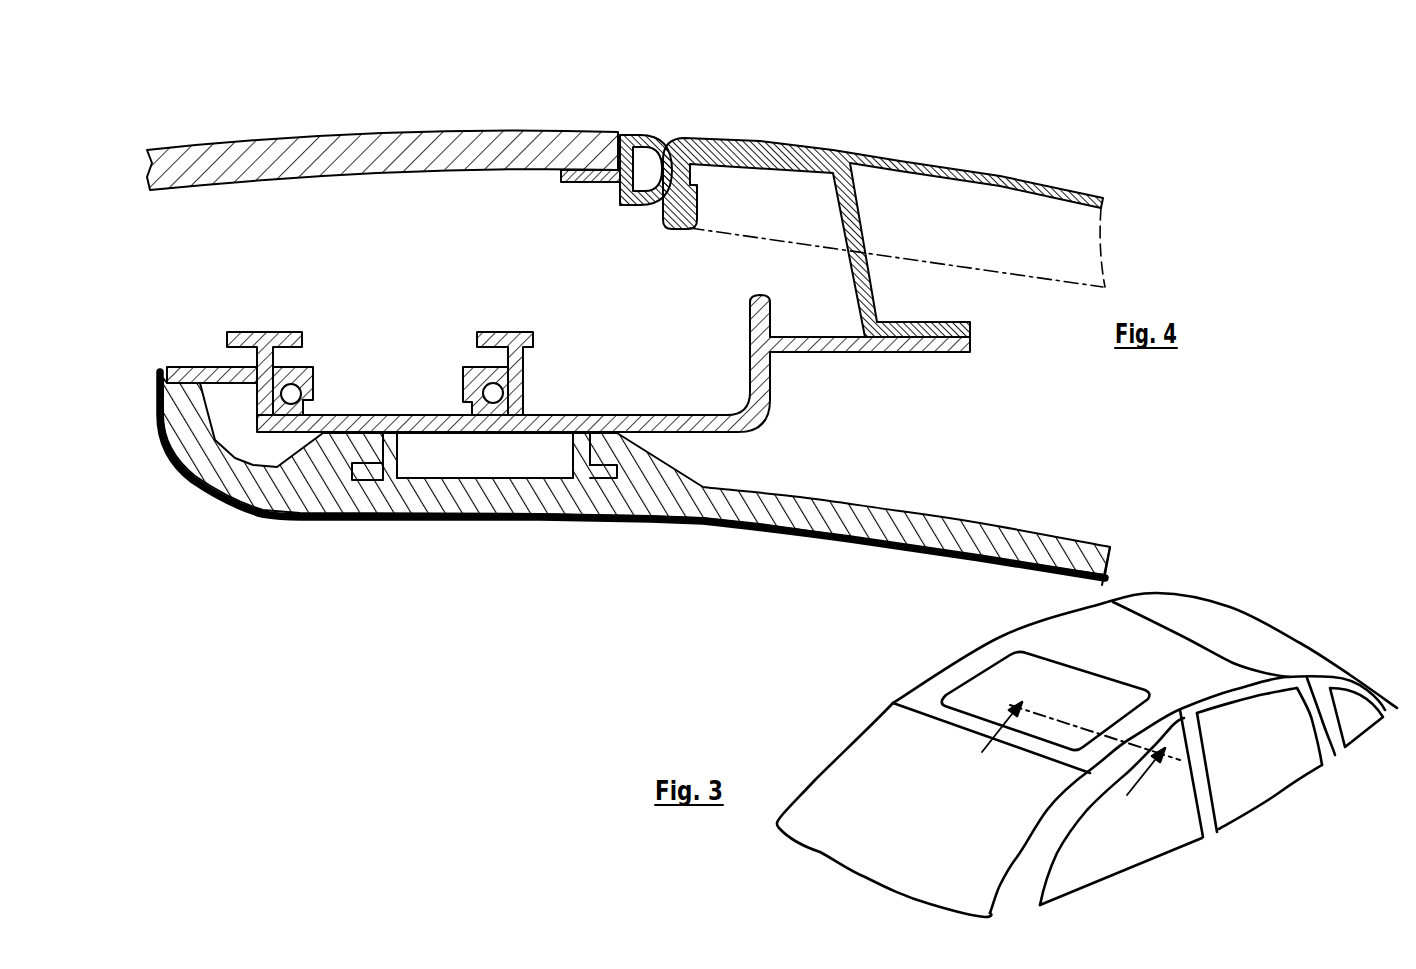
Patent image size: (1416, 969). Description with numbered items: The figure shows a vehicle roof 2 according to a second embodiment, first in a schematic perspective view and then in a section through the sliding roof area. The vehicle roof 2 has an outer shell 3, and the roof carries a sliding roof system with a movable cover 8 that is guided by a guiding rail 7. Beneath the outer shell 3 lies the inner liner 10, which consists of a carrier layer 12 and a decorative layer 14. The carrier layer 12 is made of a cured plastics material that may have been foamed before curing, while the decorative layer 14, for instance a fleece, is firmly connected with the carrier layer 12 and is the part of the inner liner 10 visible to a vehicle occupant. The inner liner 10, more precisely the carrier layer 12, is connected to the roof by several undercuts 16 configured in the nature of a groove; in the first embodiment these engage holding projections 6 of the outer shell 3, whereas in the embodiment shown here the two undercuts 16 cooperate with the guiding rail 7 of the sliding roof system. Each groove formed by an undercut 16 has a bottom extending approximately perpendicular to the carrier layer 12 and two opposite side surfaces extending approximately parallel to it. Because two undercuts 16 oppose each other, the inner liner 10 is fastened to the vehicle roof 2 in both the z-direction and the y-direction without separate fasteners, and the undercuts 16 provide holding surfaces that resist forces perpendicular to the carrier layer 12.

In FIG. 3, the vehicle roof 2 is at (1180, 643).
In FIG. 4, the outer shell 3 is at (905, 192).
In FIG. 4, the holding projections 6 is at (375, 467).
In FIG. 4, the guiding rail 7 is at (697, 420).
In FIG. 4, the movable cover 8 is at (488, 163).
In FIG. 3, the movable cover 8 is at (987, 683).
In FIG. 4, the inner liner 10 is at (614, 563).
In FIG. 4, the carrier layer 12 is at (732, 512).
In FIG. 4, the decorative layer 14 is at (823, 537).
In FIG. 4, the undercuts 16 is at (357, 467).